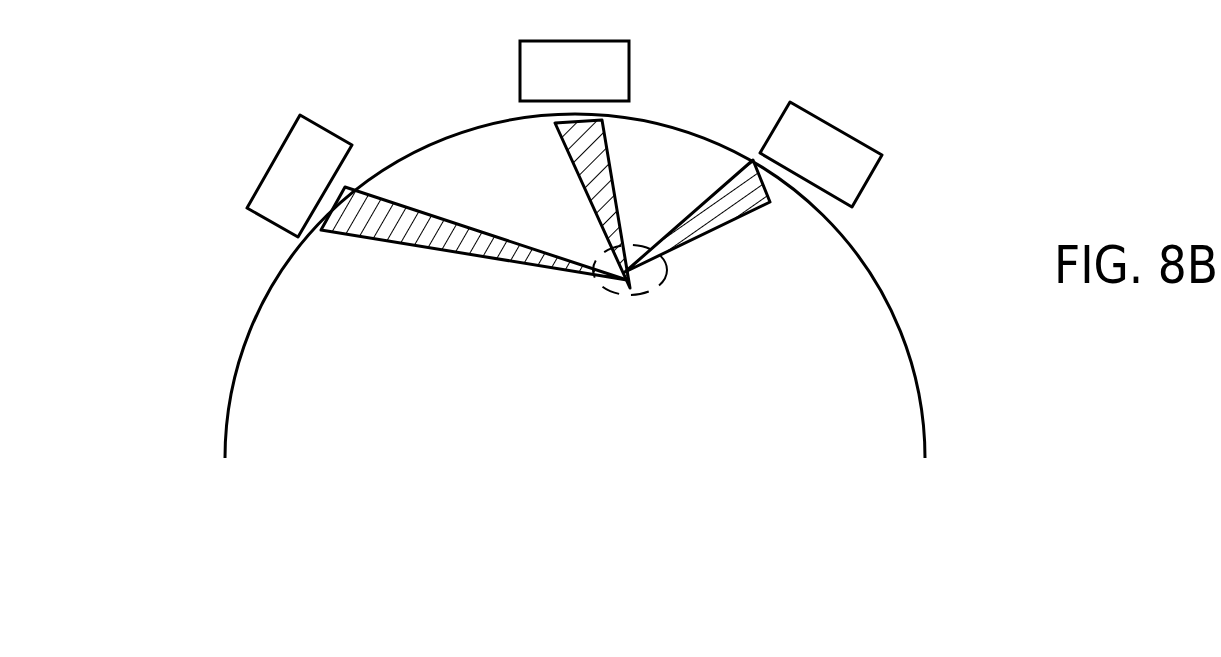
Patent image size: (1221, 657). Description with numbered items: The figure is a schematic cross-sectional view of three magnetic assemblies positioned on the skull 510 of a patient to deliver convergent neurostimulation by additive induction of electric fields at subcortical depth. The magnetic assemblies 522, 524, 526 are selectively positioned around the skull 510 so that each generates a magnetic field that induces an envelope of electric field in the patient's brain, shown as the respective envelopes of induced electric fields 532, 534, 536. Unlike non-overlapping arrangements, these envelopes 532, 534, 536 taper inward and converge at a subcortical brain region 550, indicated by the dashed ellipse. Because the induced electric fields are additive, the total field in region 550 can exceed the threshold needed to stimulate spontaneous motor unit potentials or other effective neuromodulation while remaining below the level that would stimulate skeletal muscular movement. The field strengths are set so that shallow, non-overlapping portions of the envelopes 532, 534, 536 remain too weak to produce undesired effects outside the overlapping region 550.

The skull 510 is at (922, 415).
The magnetic assembly 522 is at (313, 122).
The magnetic assembly 524 is at (629, 57).
The magnetic assembly 526 is at (870, 183).
The envelope of induced electric field 532 is at (400, 205).
The envelope of induced electric field 534 is at (612, 152).
The envelope of induced electric field 536 is at (712, 190).
The subcortical brain region 550 is at (680, 282).